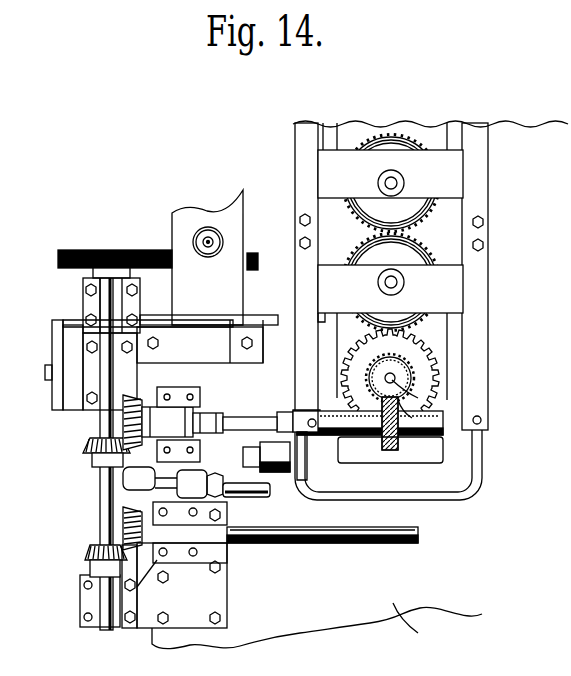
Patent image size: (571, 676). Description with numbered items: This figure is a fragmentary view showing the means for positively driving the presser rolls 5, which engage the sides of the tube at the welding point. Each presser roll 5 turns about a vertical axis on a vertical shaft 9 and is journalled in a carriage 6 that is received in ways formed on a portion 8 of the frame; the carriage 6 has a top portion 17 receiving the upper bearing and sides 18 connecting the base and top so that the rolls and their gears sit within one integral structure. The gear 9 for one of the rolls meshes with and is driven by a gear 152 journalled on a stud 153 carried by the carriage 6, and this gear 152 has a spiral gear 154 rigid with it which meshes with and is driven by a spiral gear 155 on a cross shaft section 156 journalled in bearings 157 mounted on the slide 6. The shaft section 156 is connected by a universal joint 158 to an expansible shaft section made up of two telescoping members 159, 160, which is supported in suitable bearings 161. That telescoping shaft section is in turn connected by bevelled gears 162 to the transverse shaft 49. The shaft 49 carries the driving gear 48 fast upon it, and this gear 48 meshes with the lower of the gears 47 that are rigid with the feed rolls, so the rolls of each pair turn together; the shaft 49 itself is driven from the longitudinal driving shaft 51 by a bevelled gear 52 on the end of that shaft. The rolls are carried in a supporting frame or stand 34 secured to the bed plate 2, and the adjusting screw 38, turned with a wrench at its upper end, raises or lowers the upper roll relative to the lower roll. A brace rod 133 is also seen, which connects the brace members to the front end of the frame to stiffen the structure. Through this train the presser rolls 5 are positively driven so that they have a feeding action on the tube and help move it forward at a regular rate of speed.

The bed plate 2 is at (317, 626).
The presser roll 5 is at (430, 203).
The carriage 6 is at (427, 333).
The frame portion 8 is at (458, 468).
The vertical shaft 9 is at (415, 139).
The top portion 17 is at (418, 229).
The sides 18 is at (452, 128).
The supporting frame 34 is at (232, 208).
The adjusting screw 38 is at (206, 240).
The gear 47 is at (257, 253).
The driving gear 48 is at (112, 250).
The shaft 49 is at (102, 503).
The driving shaft 51 is at (320, 543).
The bevelled gear 52 is at (107, 545).
The brace rod 133 is at (250, 493).
The gear 152 is at (427, 378).
The stud 153 is at (395, 380).
The spiral gear 154 is at (380, 390).
The spiral gear 155 is at (405, 395).
The cross shaft section 156 is at (406, 451).
The bearings 157 is at (335, 440).
The universal joint 158 is at (309, 428).
The telescoping member 159 is at (210, 418).
The telescoping member 160 is at (262, 396).
The bearings 161 is at (165, 410).
The bevelled gears 162 is at (125, 428).